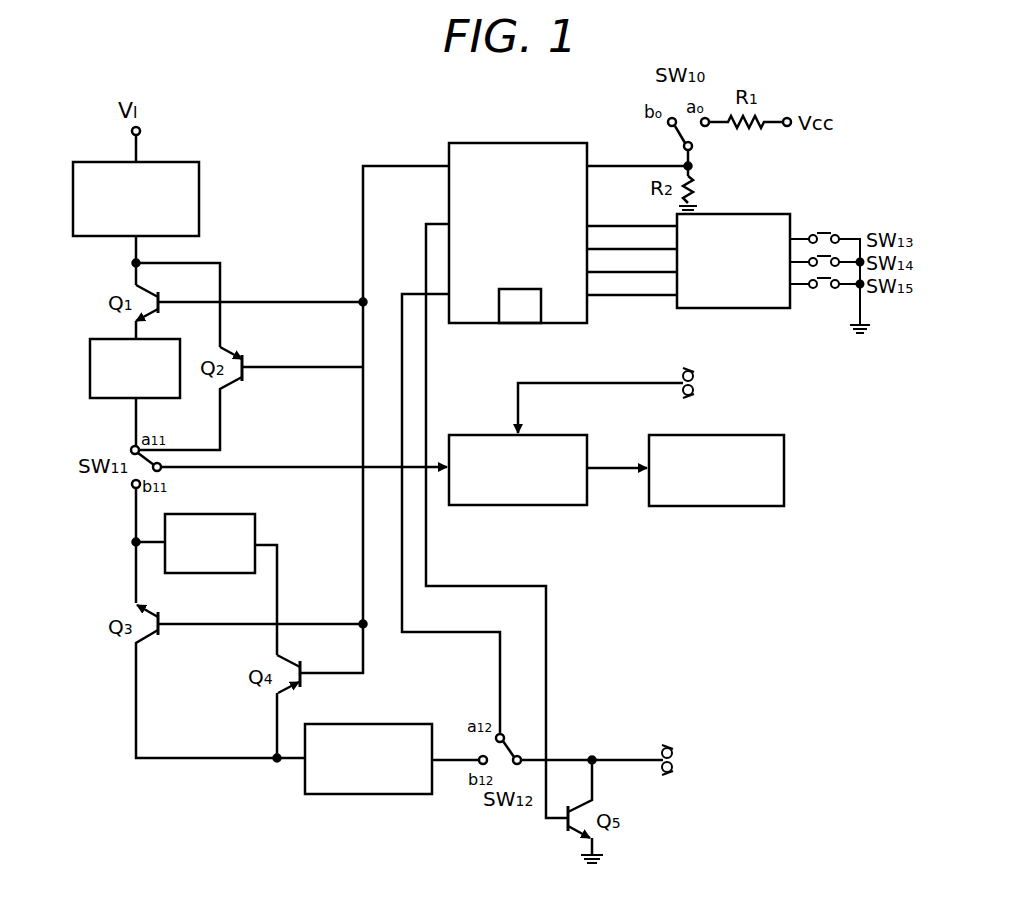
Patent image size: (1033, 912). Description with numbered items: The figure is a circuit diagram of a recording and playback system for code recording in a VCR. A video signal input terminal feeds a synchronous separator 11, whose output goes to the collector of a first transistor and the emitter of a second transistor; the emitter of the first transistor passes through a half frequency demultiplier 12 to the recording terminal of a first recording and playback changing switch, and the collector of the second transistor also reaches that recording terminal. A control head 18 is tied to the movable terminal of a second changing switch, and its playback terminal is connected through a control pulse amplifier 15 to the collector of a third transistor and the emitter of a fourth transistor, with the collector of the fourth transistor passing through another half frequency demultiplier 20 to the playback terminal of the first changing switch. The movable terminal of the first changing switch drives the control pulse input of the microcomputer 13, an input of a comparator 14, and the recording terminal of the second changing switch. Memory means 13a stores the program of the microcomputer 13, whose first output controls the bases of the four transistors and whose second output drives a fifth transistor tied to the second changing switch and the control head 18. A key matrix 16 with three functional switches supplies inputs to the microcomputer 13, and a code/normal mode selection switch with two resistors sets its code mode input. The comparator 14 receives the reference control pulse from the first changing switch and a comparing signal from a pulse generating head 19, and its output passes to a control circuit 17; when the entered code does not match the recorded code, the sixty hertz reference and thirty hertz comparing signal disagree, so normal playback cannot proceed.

The synchronous separator 11 is at (87, 231).
The 1/2 frequency demultiplier 12 is at (93, 399).
The microcomputer 13 is at (470, 323).
The memory means 13a is at (525, 323).
The comparator 14 is at (515, 505).
The control pulse amplifier 15 is at (333, 794).
The key matrix 16 is at (738, 308).
The control circuit 17 is at (728, 506).
The control head 18 is at (683, 760).
The pulse generating head 19 is at (703, 385).
The 1/2 frequency demultiplier 20 is at (255, 521).